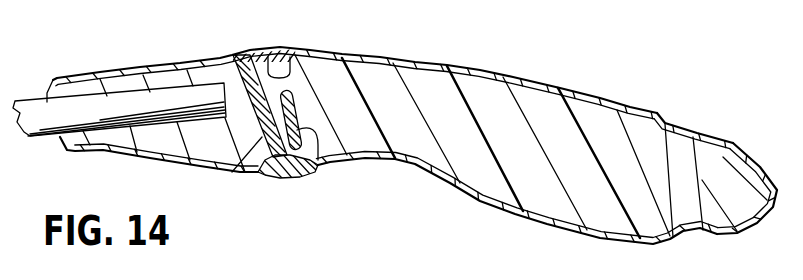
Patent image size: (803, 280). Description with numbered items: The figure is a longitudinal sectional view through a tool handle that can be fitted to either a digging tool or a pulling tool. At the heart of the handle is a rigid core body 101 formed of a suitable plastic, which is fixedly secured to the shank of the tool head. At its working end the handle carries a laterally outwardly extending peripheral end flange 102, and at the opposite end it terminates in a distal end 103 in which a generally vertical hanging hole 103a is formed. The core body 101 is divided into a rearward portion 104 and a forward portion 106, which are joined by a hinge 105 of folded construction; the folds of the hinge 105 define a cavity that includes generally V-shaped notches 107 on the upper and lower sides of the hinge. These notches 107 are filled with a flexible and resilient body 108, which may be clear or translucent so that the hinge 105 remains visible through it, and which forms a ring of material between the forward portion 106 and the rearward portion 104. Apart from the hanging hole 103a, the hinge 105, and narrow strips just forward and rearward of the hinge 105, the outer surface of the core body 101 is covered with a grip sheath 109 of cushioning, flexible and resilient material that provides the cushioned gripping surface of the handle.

The core body 101 is at (533, 97).
The peripheral end flange 102 is at (50, 82).
The distal end 103 is at (723, 157).
The hanging hole 103a is at (687, 130).
The rearward portion 104 is at (430, 160).
The hinge 105 is at (314, 70).
The forward portion 106 is at (160, 137).
The V-shaped notches 107 is at (233, 170).
The flexible and resilient body 108 is at (249, 53).
The grip sheath 109 is at (466, 67).